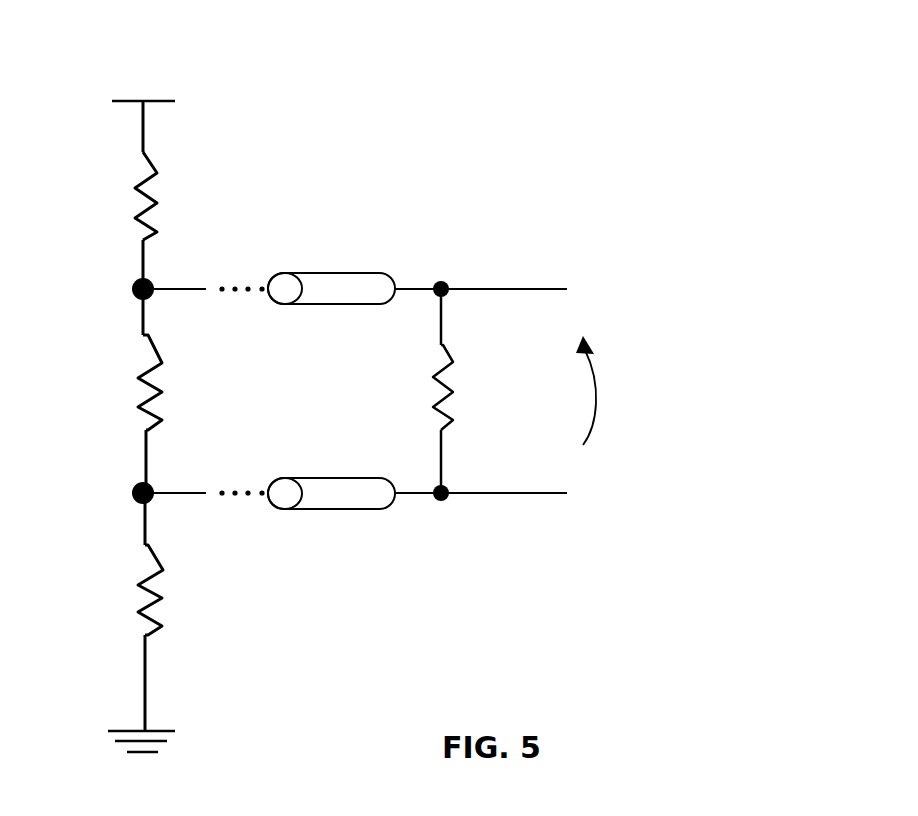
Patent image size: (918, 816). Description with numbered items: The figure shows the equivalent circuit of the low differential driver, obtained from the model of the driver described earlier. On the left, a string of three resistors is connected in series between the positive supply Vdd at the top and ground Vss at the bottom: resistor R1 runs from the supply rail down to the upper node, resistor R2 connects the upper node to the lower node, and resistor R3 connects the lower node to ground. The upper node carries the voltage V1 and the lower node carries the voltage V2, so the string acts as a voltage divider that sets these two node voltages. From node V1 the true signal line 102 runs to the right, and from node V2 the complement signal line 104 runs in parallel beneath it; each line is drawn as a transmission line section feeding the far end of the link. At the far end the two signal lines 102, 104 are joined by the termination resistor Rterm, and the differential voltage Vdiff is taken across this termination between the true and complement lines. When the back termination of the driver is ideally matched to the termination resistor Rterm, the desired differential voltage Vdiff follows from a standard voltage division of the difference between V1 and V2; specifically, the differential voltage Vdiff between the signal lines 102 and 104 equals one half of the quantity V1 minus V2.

The true signal line 102 is at (520, 289).
The complement signal line 104 is at (552, 493).
The resistor R1 is at (165, 196).
The resistor R2 is at (171, 382).
The resistor R3 is at (176, 590).
The termination resistor Rterm is at (478, 391).
The node voltage V1 is at (144, 286).
The node voltage V2 is at (144, 490).
The supply voltage Vdd is at (143, 76).
The ground Vss is at (105, 732).
The differential voltage Vdiff is at (624, 390).